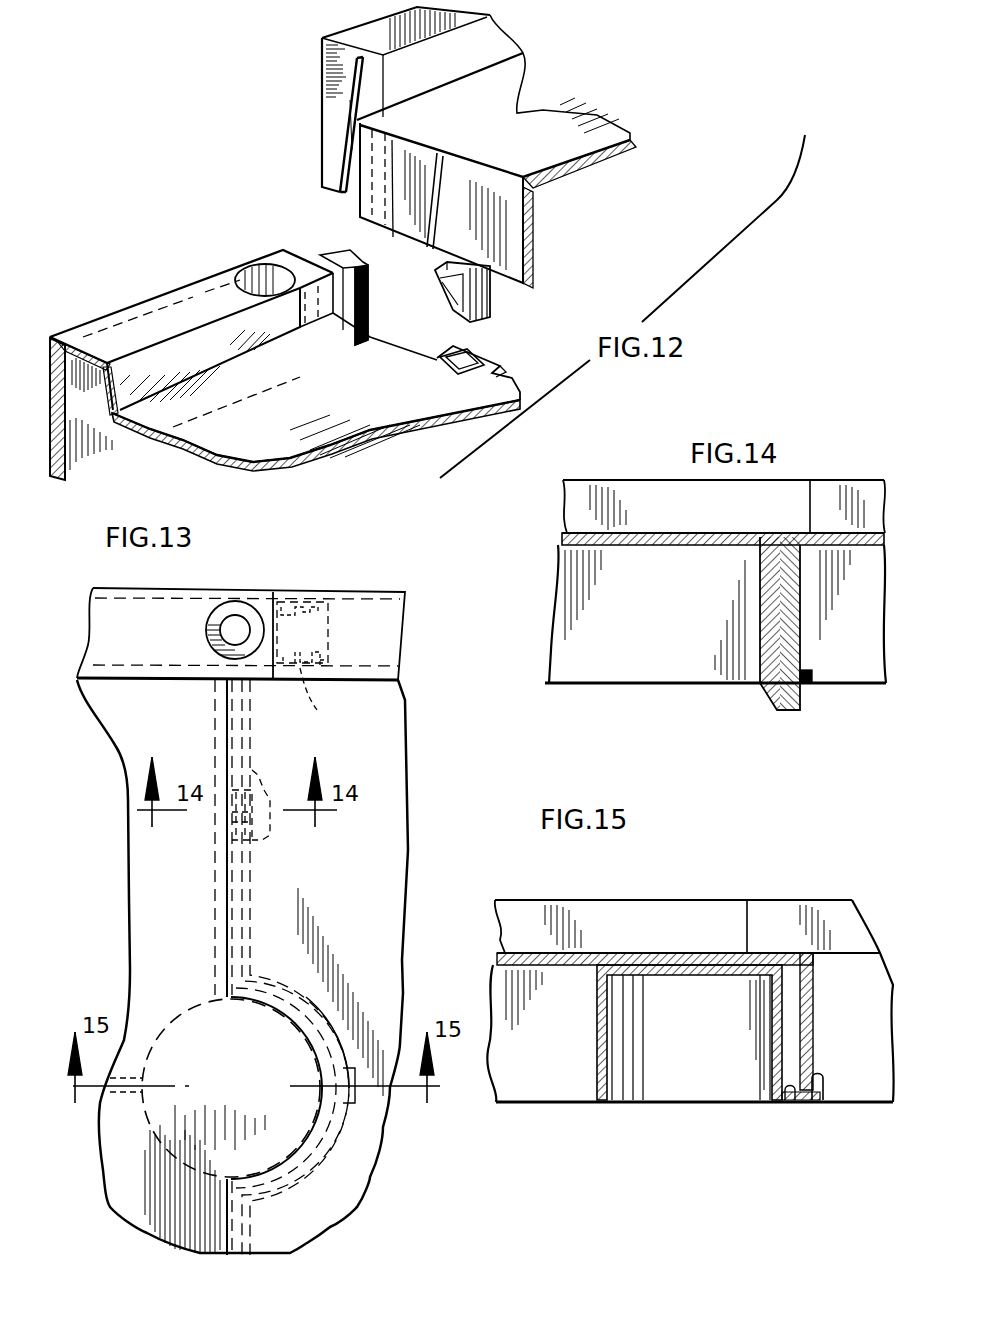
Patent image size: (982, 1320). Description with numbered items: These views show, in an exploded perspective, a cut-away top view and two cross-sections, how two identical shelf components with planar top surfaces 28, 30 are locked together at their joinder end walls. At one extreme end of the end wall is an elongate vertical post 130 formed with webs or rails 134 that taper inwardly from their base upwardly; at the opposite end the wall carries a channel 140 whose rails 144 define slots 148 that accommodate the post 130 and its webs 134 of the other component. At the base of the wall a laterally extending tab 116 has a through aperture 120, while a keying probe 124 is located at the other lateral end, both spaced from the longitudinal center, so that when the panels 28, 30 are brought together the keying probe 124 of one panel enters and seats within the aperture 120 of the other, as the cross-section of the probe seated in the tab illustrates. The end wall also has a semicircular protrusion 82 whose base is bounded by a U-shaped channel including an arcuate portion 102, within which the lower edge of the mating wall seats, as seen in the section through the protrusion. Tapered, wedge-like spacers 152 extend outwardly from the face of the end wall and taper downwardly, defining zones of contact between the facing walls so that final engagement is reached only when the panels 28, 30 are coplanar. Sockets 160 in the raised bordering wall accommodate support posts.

In FIG. 12, the planar top surface 28 is at (330, 418).
In FIG. 12, the planar top surface 30 is at (515, 115).
In FIG. 12, the protrusion 82 is at (533, 263).
In FIG. 15, the protrusion 82 is at (707, 975).
In FIG. 15, the arcuate portion 102 is at (782, 1097).
In FIG. 12, the tab 116 is at (441, 352).
In FIG. 13, the tab 116 is at (272, 833).
In FIG. 14, the tab 116 is at (810, 678).
In FIG. 12, the through aperture 120 is at (490, 364).
In FIG. 13, the through aperture 120 is at (262, 770).
In FIG. 12, the keying probe 124 is at (492, 300).
In FIG. 14, the keying probe 124 is at (800, 708).
In FIG. 12, the vertical post 130 is at (340, 250).
In FIG. 12, the webs or rails 134 is at (371, 293).
In FIG. 13, the webs or rails 134 is at (305, 600).
In FIG. 12, the channel 140 is at (327, 199).
In FIG. 13, the rails 144 is at (283, 600).
In FIG. 13, the slots 148 is at (310, 672).
In FIG. 12, the wedge-like spacers 152 is at (423, 173).
In FIG. 13, the sockets 160 is at (236, 628).